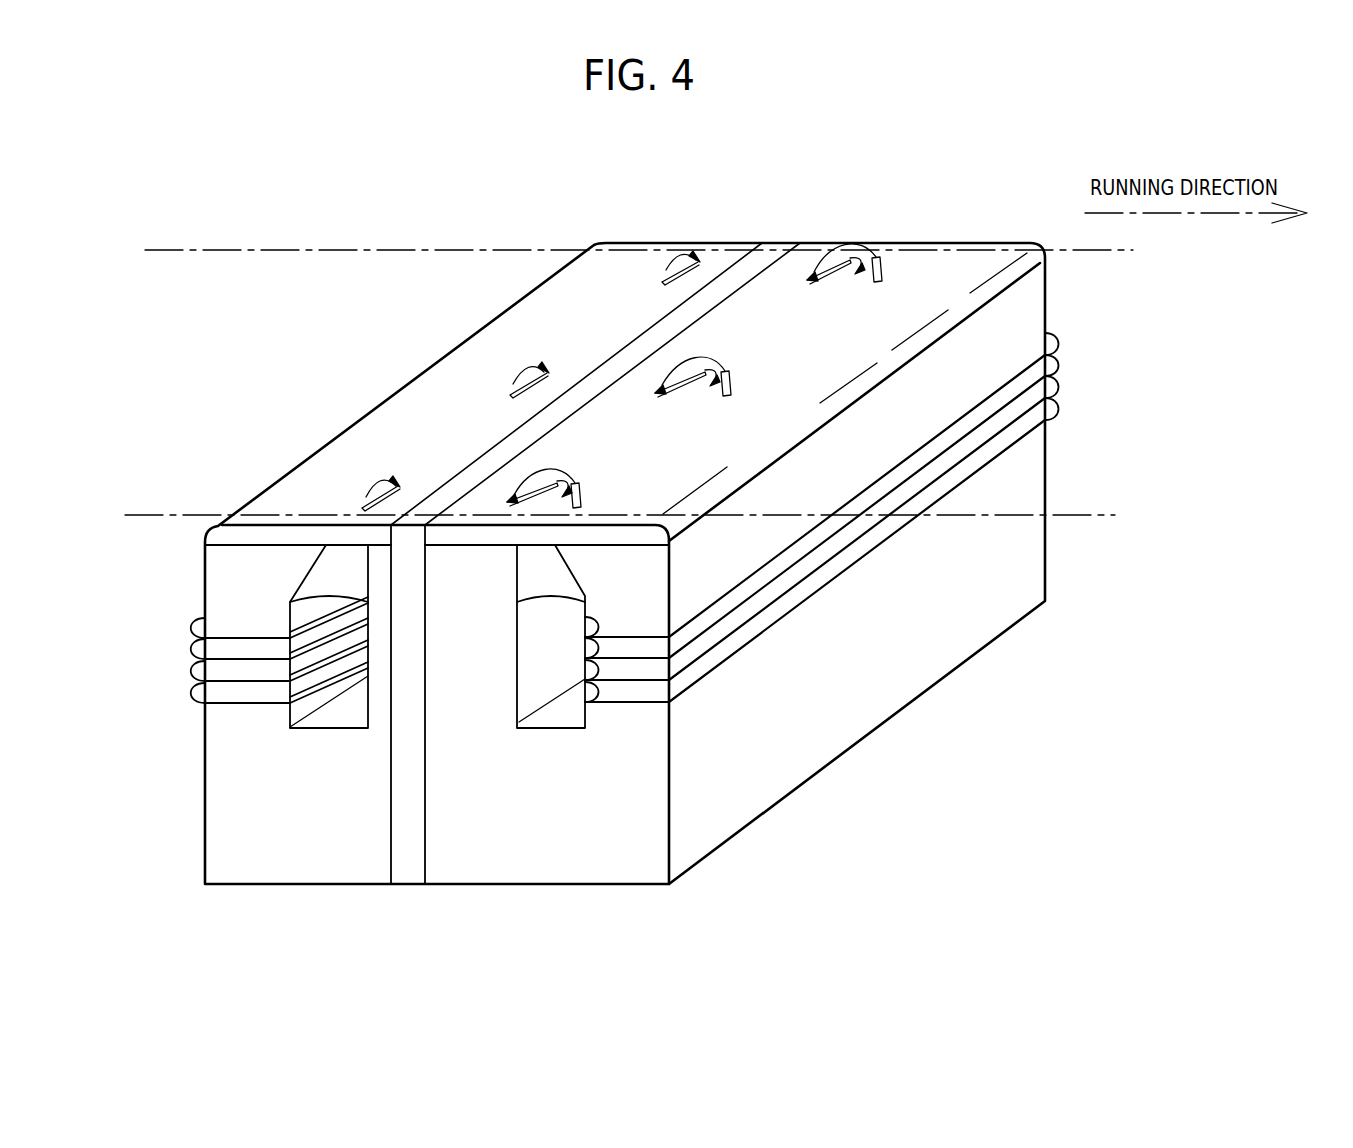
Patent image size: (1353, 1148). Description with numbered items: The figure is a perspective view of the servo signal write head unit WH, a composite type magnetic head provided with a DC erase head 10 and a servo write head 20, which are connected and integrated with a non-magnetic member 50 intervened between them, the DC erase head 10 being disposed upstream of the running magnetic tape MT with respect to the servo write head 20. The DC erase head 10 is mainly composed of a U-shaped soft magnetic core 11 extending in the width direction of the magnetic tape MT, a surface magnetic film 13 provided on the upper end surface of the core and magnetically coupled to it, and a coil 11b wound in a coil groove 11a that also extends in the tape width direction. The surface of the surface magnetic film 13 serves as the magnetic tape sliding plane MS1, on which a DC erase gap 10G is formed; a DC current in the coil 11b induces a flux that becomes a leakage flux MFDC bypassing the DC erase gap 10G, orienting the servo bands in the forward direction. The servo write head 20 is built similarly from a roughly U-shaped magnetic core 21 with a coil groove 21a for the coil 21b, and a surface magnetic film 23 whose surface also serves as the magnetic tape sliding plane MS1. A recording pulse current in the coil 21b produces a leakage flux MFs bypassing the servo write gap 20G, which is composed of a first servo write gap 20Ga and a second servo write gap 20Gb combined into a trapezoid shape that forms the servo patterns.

The magnetic tape MT is at (175, 253).
The servo signal write head unit WH is at (972, 147).
The DC erase head 10 is at (763, 236).
The non-magnetic member 50 is at (803, 236).
The servo write head 20 is at (1045, 236).
The surface magnetic film 13 is at (545, 307).
The magnetic tape sliding plane MS1 is at (545, 315).
The DC erase gap 10G is at (510, 395).
The leakage flux MFDC is at (365, 487).
The leakage flux MFs is at (583, 505).
The surface magnetic film 23 is at (937, 302).
The first servo write gap 20Ga is at (507, 502).
The second servo write gap 20Gb is at (578, 508).
The servo write gap 20G is at (1098, 685).
The magnetic core 11 is at (232, 810).
The coil groove 11a is at (345, 718).
The coil 11b is at (195, 672).
The magnetic core 21 is at (473, 861).
The coil groove 21a is at (558, 718).
The coil 21b is at (801, 610).